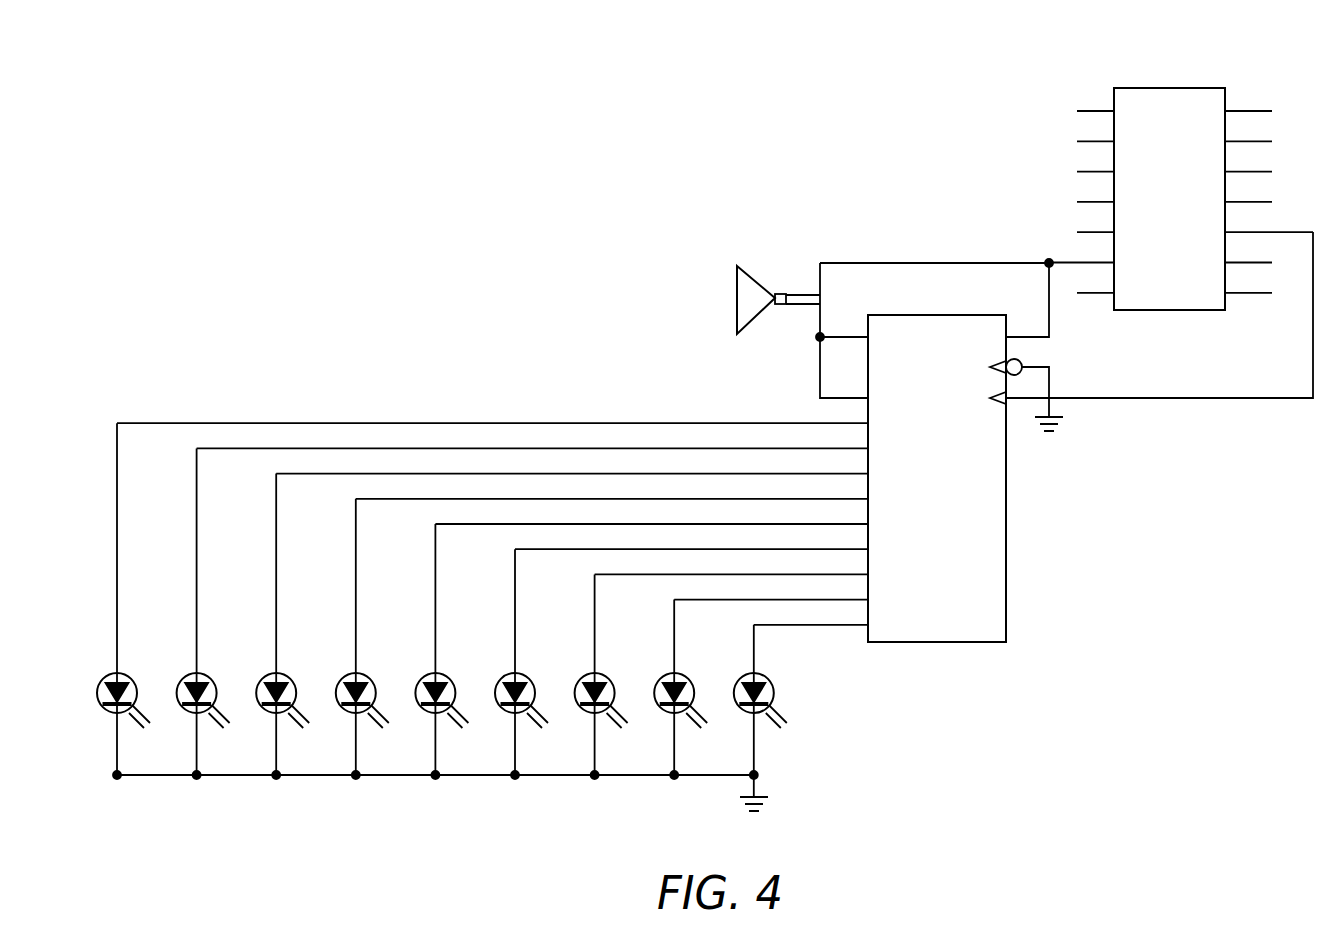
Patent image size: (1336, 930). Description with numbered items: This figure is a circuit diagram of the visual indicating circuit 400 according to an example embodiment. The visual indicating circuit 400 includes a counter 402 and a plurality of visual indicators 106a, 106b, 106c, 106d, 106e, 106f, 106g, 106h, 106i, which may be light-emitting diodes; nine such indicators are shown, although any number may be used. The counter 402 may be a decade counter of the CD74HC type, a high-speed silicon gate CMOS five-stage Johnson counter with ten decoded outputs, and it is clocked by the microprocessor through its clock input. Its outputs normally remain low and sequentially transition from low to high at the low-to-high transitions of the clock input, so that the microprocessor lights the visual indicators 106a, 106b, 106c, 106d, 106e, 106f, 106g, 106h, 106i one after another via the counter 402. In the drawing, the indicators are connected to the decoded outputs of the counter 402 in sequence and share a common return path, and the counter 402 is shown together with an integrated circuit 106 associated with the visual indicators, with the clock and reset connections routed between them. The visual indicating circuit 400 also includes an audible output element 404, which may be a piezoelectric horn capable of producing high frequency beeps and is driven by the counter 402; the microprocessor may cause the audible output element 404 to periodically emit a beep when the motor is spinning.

The visual indicating circuit 400 is at (456, 257).
The counter 402 is at (1006, 538).
The audible output element 404 is at (755, 277).
The visual indicator 106 is at (1163, 88).
The visual indicator 106a is at (137, 692).
The visual indicator 106b is at (217, 692).
The visual indicator 106c is at (296, 692).
The visual indicator 106d is at (376, 692).
The visual indicator 106e is at (455, 692).
The visual indicator 106f is at (535, 692).
The visual indicator 106g is at (615, 692).
The visual indicator 106h is at (694, 692).
The visual indicator 106i is at (774, 692).